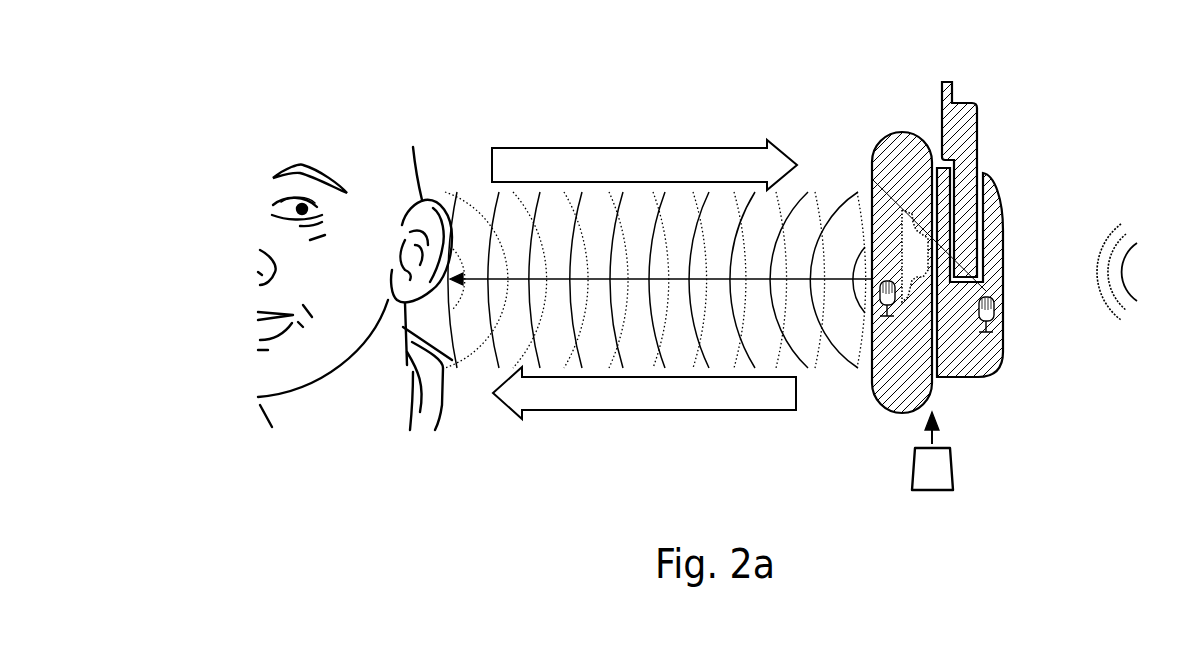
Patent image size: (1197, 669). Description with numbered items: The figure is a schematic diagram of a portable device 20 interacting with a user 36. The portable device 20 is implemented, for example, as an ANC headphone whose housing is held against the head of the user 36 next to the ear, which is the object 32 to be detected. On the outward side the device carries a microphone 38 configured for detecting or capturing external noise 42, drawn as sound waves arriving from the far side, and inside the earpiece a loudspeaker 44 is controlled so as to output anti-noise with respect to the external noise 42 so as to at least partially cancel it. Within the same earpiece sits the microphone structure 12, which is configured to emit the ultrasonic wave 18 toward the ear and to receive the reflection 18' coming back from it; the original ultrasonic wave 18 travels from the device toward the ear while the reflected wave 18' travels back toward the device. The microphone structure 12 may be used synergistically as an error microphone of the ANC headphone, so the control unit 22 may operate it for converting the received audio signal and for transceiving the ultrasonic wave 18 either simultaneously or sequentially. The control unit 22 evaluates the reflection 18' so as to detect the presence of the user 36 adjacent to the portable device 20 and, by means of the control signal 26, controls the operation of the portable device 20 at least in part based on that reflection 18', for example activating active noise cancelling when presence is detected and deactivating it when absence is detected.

The microphone structure 12 is at (878, 312).
The ultrasonic wave 18 is at (660, 345).
The reflection 18' is at (655, 217).
The portable device 20 is at (974, 86).
The control unit 22 is at (953, 468).
The control signal 26 is at (937, 435).
The object 32 is at (424, 170).
The user 36 is at (357, 161).
The microphone 38 is at (993, 317).
The external noise 42 is at (1128, 227).
The loudspeaker 44 is at (908, 237).